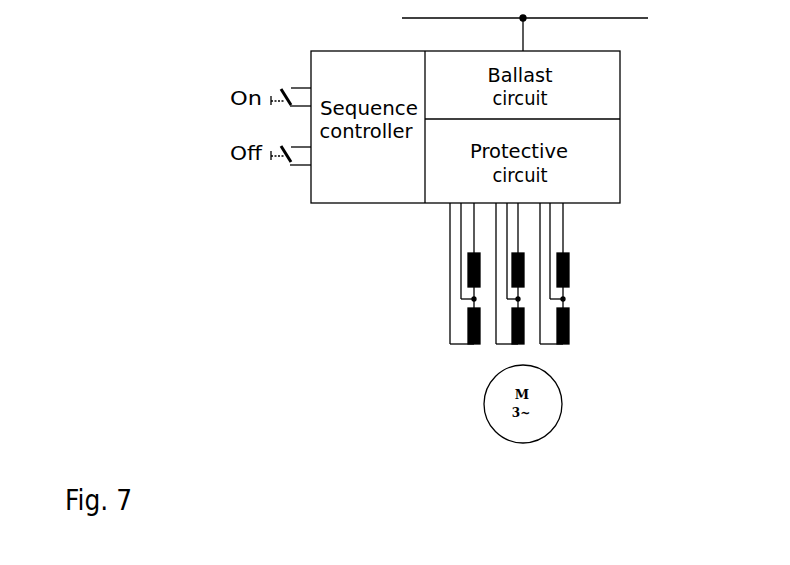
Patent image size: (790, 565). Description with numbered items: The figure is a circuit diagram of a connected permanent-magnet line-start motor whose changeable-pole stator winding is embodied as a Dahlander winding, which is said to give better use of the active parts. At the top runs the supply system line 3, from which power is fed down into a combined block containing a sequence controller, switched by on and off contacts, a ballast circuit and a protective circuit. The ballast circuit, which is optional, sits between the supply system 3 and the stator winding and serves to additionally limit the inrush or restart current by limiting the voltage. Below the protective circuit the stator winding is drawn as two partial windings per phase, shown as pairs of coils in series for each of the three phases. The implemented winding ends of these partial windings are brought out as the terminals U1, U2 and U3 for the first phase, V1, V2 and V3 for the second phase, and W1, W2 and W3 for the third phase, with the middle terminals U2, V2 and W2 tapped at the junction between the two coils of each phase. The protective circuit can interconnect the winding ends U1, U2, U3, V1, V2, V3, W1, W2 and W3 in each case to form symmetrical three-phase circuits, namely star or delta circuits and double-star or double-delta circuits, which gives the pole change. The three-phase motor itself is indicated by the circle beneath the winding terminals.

The supply network / mains line 3 is at (562, 25).
The winding end U1 is at (478, 251).
The winding end U2 is at (475, 254).
The winding end U3 is at (465, 281).
The winding end V1 is at (522, 251).
The winding end V2 is at (520, 254).
The winding end V3 is at (510, 281).
The winding end W1 is at (568, 251).
The winding end W2 is at (565, 254).
The winding end W3 is at (556, 281).